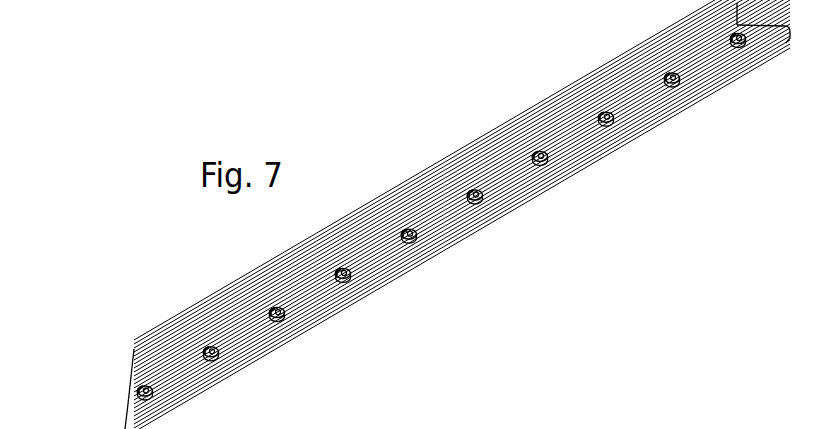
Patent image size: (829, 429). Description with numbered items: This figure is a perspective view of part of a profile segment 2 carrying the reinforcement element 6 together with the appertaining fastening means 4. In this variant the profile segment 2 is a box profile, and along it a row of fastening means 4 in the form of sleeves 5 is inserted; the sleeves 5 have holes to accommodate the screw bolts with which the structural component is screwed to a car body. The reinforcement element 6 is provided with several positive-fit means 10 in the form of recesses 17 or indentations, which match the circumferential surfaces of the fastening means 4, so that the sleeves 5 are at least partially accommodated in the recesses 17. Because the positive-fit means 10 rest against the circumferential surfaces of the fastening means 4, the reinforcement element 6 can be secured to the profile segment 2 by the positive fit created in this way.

The profile segment 2 is at (405, 214).
The fastening means 4 is at (684, 134).
The sleeve 5 is at (676, 84).
The reinforcement element 6 is at (445, 225).
The positive-fit means 10 is at (400, 145).
The recess 17 is at (466, 188).